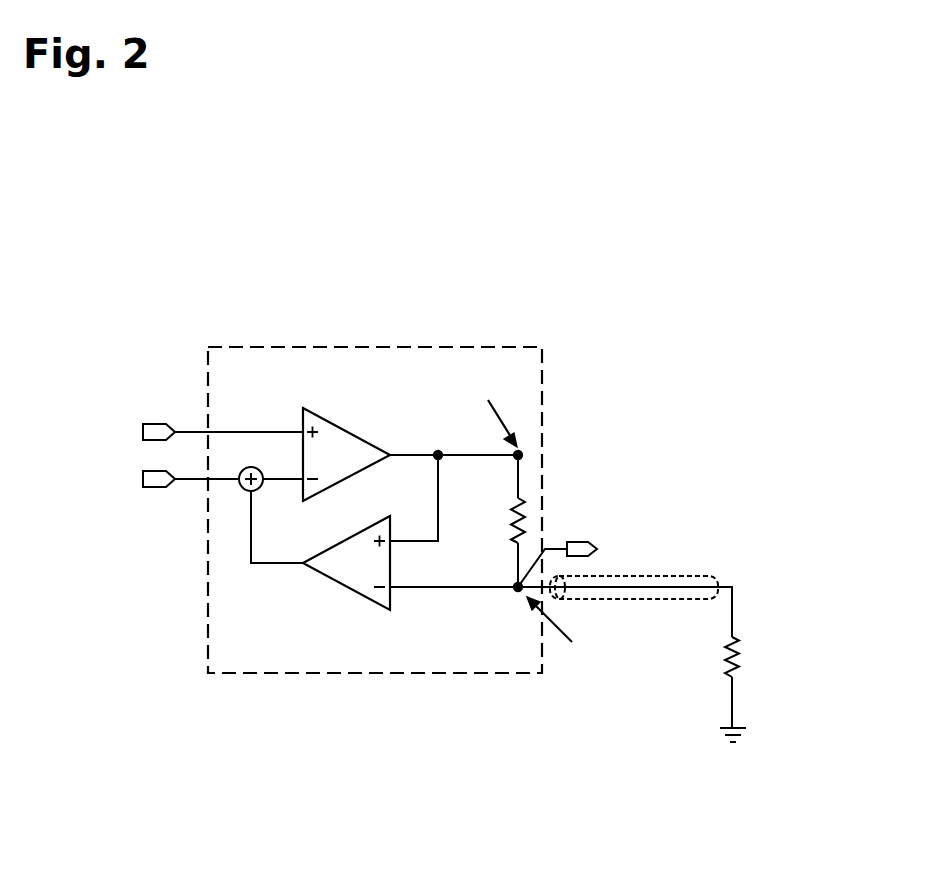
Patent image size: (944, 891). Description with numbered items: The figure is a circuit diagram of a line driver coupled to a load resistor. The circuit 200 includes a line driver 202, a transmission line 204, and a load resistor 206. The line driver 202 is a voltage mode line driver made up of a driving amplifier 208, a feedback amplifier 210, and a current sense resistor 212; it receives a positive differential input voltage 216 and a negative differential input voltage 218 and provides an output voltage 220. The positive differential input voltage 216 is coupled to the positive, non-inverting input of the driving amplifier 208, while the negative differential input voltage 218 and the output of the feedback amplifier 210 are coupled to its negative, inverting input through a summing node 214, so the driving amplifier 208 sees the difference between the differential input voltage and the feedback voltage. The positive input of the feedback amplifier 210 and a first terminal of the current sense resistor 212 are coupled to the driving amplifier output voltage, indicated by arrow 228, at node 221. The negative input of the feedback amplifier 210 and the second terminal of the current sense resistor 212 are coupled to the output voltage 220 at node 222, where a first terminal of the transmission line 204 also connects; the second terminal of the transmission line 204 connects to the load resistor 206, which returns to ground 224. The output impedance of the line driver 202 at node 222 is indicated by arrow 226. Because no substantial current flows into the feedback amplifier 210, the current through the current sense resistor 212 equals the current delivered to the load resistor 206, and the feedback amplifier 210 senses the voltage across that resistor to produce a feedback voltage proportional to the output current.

The circuit 200 is at (773, 117).
The line driver 202 is at (403, 347).
The transmission line 204 is at (665, 601).
The load resistor 206 is at (745, 643).
The driving amplifier 208 is at (352, 428).
The feedback amplifier 210 is at (357, 535).
The current sense resistor 212 is at (512, 518).
The summing node 214 is at (247, 490).
The differential input voltage VIP 216 is at (143, 432).
The differential input voltage VIN 218 is at (143, 480).
The output voltage VOUT 220 is at (598, 553).
The node 221 is at (516, 462).
The node 222 is at (517, 583).
The ground 224 is at (722, 726).
The arrow indicating output impedance ZOUT 226 is at (553, 615).
The arrow indicating output voltage VAMP 228 is at (491, 420).